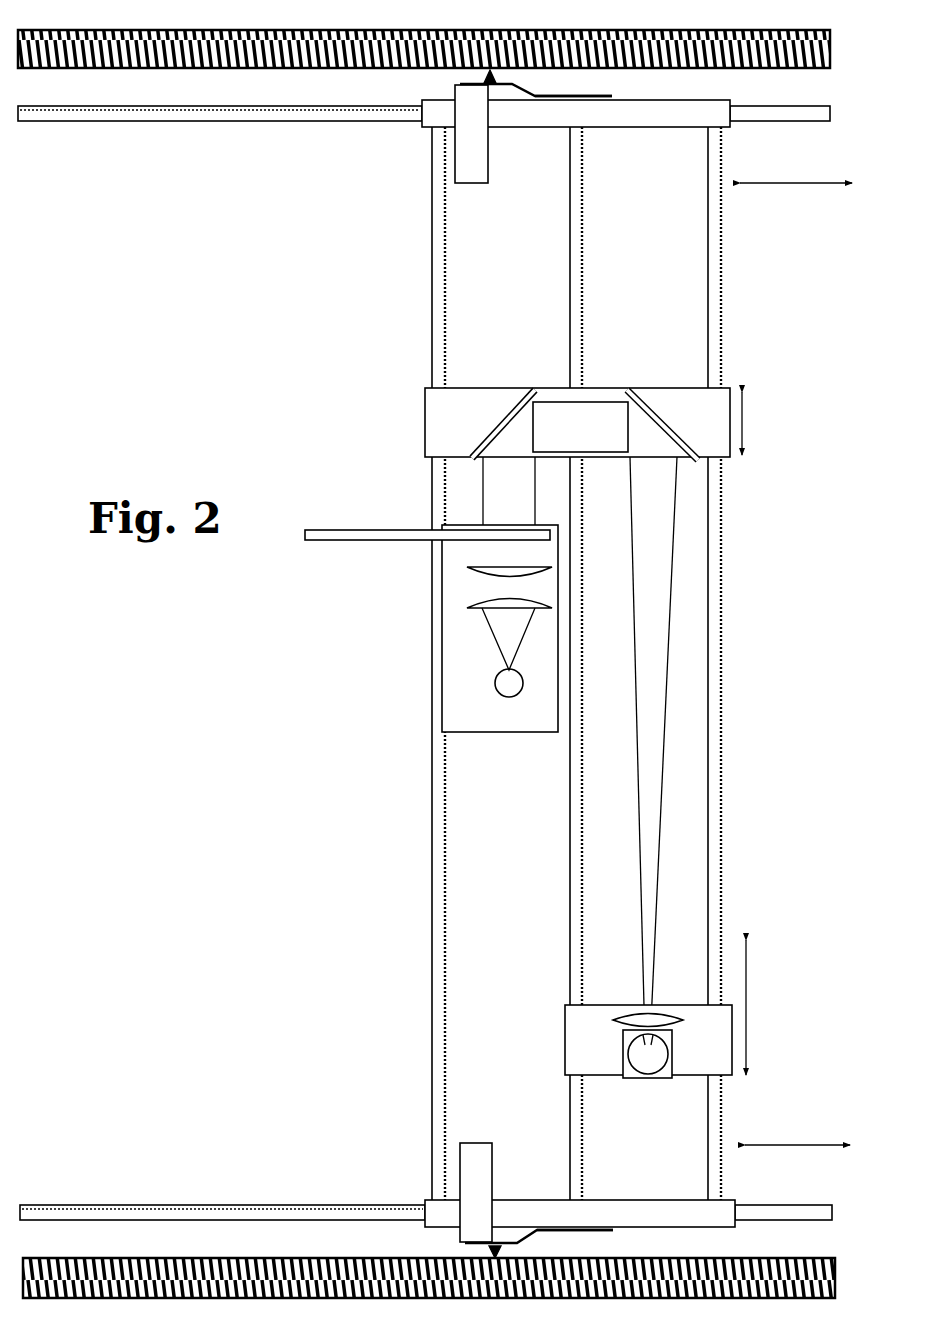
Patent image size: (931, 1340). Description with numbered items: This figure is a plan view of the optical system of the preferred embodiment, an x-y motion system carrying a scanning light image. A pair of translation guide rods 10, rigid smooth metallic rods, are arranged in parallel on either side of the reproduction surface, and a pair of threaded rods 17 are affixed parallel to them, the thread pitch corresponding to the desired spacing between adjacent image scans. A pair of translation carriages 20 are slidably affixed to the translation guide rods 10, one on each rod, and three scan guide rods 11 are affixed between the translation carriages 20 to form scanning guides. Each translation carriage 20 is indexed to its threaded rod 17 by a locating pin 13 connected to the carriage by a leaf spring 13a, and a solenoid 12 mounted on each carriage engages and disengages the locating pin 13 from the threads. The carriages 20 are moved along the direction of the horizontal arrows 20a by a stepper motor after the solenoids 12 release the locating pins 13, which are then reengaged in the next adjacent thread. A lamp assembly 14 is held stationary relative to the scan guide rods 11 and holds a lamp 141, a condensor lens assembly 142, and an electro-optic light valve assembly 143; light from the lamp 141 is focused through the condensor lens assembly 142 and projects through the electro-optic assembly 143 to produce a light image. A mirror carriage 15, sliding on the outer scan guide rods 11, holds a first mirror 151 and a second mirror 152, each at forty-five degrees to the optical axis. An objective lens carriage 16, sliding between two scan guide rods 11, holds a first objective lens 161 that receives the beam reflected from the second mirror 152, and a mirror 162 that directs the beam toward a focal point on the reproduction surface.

The translation guide rod 10 is at (155, 106).
The scan guide rod 11 is at (446, 252).
The solenoid 12 is at (488, 172).
The locating pin 13 is at (460, 81).
The leaf spring 13a is at (528, 87).
The lamp assembly 14 is at (431, 630).
The lamp 141 is at (499, 687).
The condensor lens assembly 142 is at (470, 567).
The electro-optic light valve assembly 143 is at (337, 530).
The mirror carriage 15 is at (597, 406).
The first mirror 151 is at (533, 388).
The second mirror 152 is at (636, 388).
The objective lens carriage 16 is at (631, 1026).
The first objective lens 161 is at (632, 1015).
The mirror 162 is at (645, 1078).
The threaded rod 17 is at (152, 32).
The translation carriage 20 is at (578, 664).
The horizontal arrow 20a is at (785, 183).